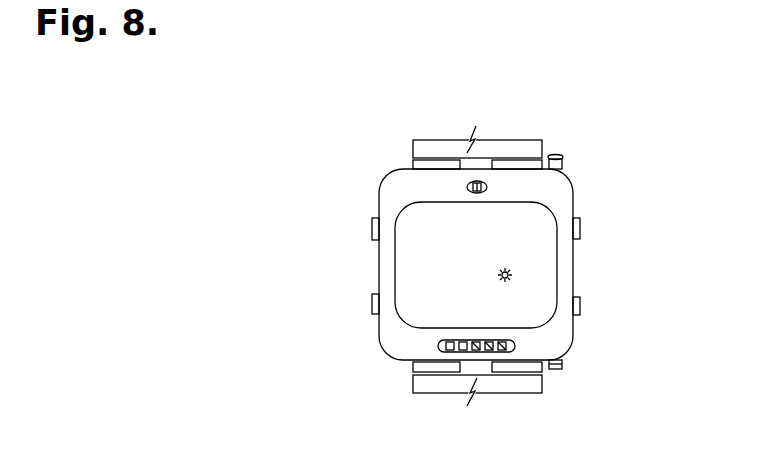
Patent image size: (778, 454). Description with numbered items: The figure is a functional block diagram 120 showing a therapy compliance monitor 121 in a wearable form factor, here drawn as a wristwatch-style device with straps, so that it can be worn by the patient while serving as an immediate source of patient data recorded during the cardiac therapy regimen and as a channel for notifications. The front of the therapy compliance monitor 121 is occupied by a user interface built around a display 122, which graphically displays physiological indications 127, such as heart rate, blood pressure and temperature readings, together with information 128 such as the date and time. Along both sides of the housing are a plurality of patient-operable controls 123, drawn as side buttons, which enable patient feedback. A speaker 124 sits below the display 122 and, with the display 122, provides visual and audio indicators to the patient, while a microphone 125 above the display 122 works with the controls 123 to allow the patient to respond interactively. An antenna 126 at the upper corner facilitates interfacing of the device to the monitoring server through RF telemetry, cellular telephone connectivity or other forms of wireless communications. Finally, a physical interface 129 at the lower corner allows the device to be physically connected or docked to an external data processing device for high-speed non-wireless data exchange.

The functional block diagram 120 is at (152, 96).
The therapy compliance monitor 121 is at (565, 356).
The display 122 is at (557, 268).
The patient-operable controls 123 is at (360, 229).
The speaker 124 is at (438, 346).
The microphone 125 is at (467, 187).
The antenna 126 is at (563, 168).
The physiological indications 127 is at (443, 270).
The information 128 is at (447, 213).
The physical interface 129 is at (563, 378).